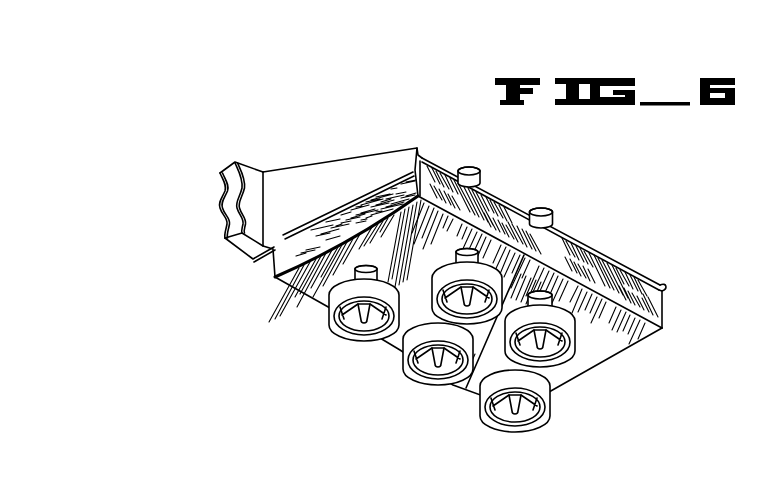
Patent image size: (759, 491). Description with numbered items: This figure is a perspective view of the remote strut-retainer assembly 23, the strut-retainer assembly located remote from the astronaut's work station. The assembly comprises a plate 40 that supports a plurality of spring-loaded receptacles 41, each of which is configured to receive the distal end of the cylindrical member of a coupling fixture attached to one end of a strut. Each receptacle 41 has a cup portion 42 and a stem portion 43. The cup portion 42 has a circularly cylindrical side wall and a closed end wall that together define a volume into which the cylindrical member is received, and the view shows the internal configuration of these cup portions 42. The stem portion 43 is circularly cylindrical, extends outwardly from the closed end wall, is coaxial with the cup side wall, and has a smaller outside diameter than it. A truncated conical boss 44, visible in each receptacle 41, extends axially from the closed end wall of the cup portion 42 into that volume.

The remote strut-retainer assembly 23 is at (346, 126).
The plate 40 is at (289, 259).
The spring-loaded receptacle 41 is at (322, 321).
The cup portion 42 is at (350, 312).
The stem portion 43 is at (542, 208).
The truncated conical boss 44 is at (353, 289).